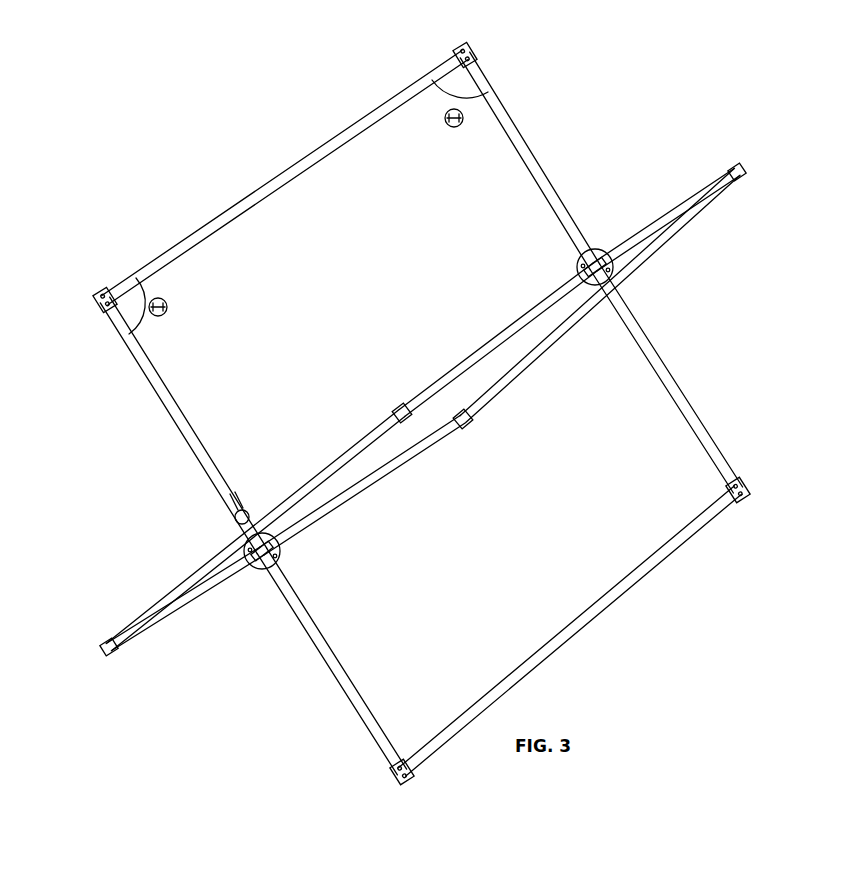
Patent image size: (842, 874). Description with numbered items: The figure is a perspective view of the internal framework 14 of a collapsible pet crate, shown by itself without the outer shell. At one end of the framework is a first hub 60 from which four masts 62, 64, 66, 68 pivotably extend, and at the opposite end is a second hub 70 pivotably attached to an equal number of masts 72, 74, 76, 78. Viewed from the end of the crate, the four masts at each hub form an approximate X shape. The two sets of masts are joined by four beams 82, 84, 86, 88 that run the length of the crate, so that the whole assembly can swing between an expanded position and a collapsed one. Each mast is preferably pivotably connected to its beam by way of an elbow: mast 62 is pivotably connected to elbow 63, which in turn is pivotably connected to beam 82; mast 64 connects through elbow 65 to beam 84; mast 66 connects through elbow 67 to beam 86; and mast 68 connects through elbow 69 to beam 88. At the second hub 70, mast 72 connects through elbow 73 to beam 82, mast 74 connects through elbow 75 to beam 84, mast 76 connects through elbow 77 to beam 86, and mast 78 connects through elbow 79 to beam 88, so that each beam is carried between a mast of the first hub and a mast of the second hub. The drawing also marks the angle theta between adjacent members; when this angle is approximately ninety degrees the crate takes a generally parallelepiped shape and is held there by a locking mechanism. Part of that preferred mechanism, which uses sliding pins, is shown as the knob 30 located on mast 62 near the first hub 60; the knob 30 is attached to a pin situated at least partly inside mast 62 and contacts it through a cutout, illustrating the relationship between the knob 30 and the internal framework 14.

The internal framework 14 is at (172, 725).
The knob 30 is at (234, 518).
The first hub 60 is at (262, 571).
The mast 62 is at (172, 398).
The elbow 63 is at (99, 292).
The mast 64 is at (370, 483).
The elbow 65 is at (463, 427).
The mast 66 is at (177, 607).
The elbow 67 is at (113, 656).
The mast 68 is at (357, 697).
The elbow 69 is at (395, 786).
The second hub 70 is at (591, 248).
The mast 72 is at (523, 130).
The elbow 73 is at (458, 50).
The mast 74 is at (664, 218).
The elbow 75 is at (745, 167).
The mast 76 is at (505, 337).
The elbow 77 is at (403, 406).
The mast 78 is at (668, 368).
The elbow 79 is at (748, 490).
The beam 82 is at (252, 198).
The beam 84 is at (527, 362).
The beam 86 is at (332, 472).
The beam 88 is at (582, 626).